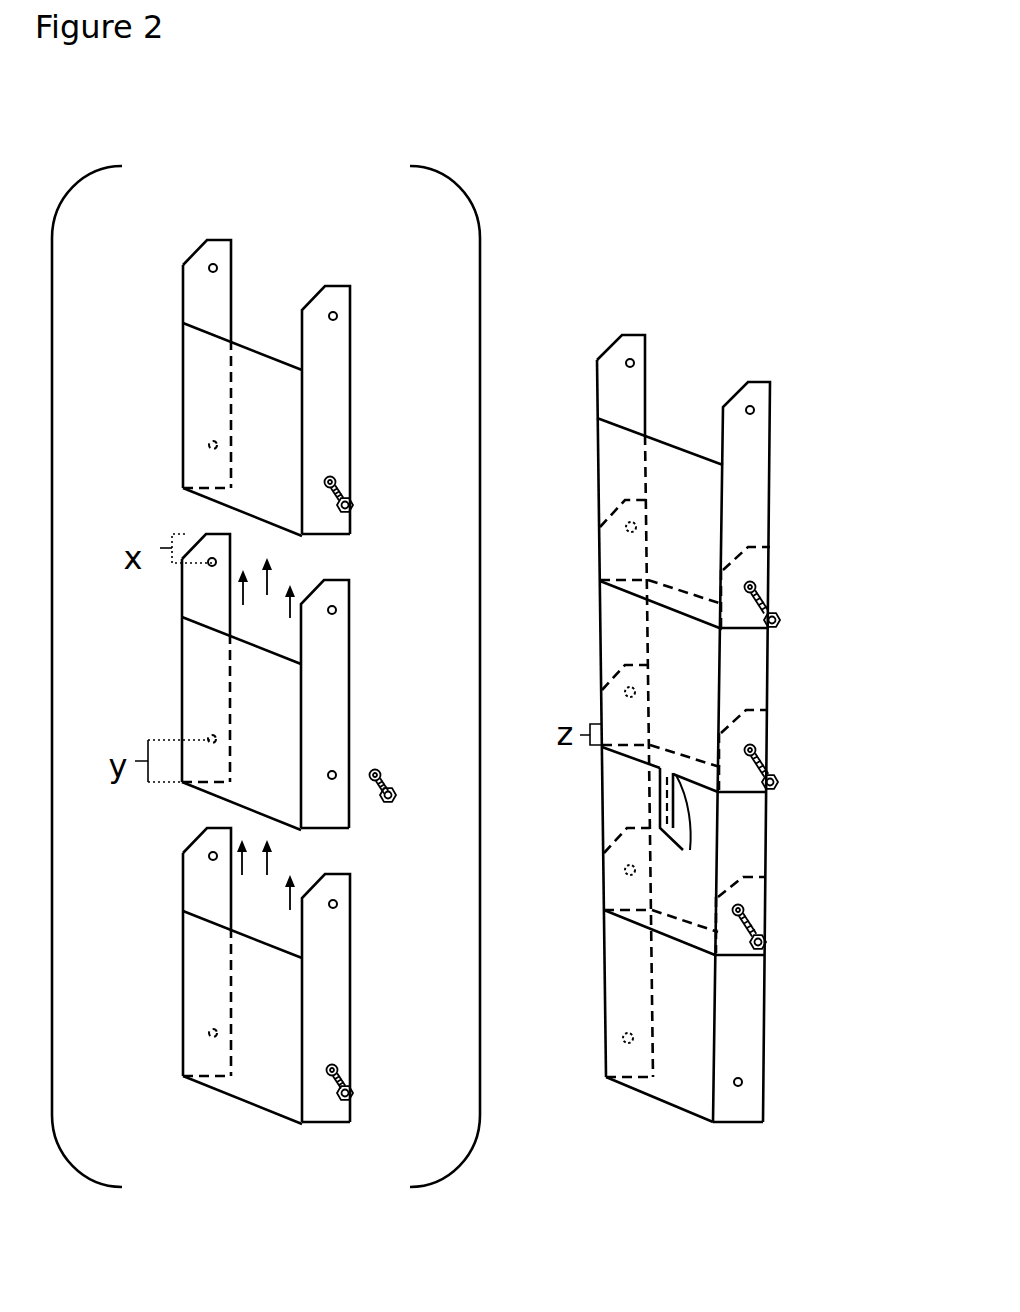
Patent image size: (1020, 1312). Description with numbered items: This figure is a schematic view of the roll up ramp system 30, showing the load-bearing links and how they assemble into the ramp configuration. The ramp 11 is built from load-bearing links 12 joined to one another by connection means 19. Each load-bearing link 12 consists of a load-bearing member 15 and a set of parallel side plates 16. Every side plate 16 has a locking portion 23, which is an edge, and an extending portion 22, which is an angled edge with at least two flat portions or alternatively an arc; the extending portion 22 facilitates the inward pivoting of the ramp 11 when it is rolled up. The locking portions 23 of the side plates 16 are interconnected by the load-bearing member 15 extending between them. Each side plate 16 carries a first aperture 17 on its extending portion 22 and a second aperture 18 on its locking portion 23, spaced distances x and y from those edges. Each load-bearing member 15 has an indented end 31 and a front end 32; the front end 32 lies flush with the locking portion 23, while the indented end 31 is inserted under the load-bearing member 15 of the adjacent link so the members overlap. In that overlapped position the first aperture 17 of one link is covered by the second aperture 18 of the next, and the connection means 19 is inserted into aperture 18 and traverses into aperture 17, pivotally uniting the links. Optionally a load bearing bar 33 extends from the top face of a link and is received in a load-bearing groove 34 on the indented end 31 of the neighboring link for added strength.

The roll up ramp system 30 is at (457, 73).
The ramp 11 is at (592, 781).
The load-bearing link 12 is at (183, 365).
The load-bearing member 15 is at (265, 415).
The side plate 16 is at (350, 690).
The first aperture 17 is at (337, 317).
The second aperture 18 is at (340, 482).
The connection means 19 is at (352, 507).
The extending portion 22 is at (183, 258).
The locking portion 23 is at (183, 487).
The indented end 31 is at (267, 353).
The front end 32 is at (243, 521).
The load bearing bar 33 is at (673, 775).
The load-bearing groove 34 is at (680, 800).